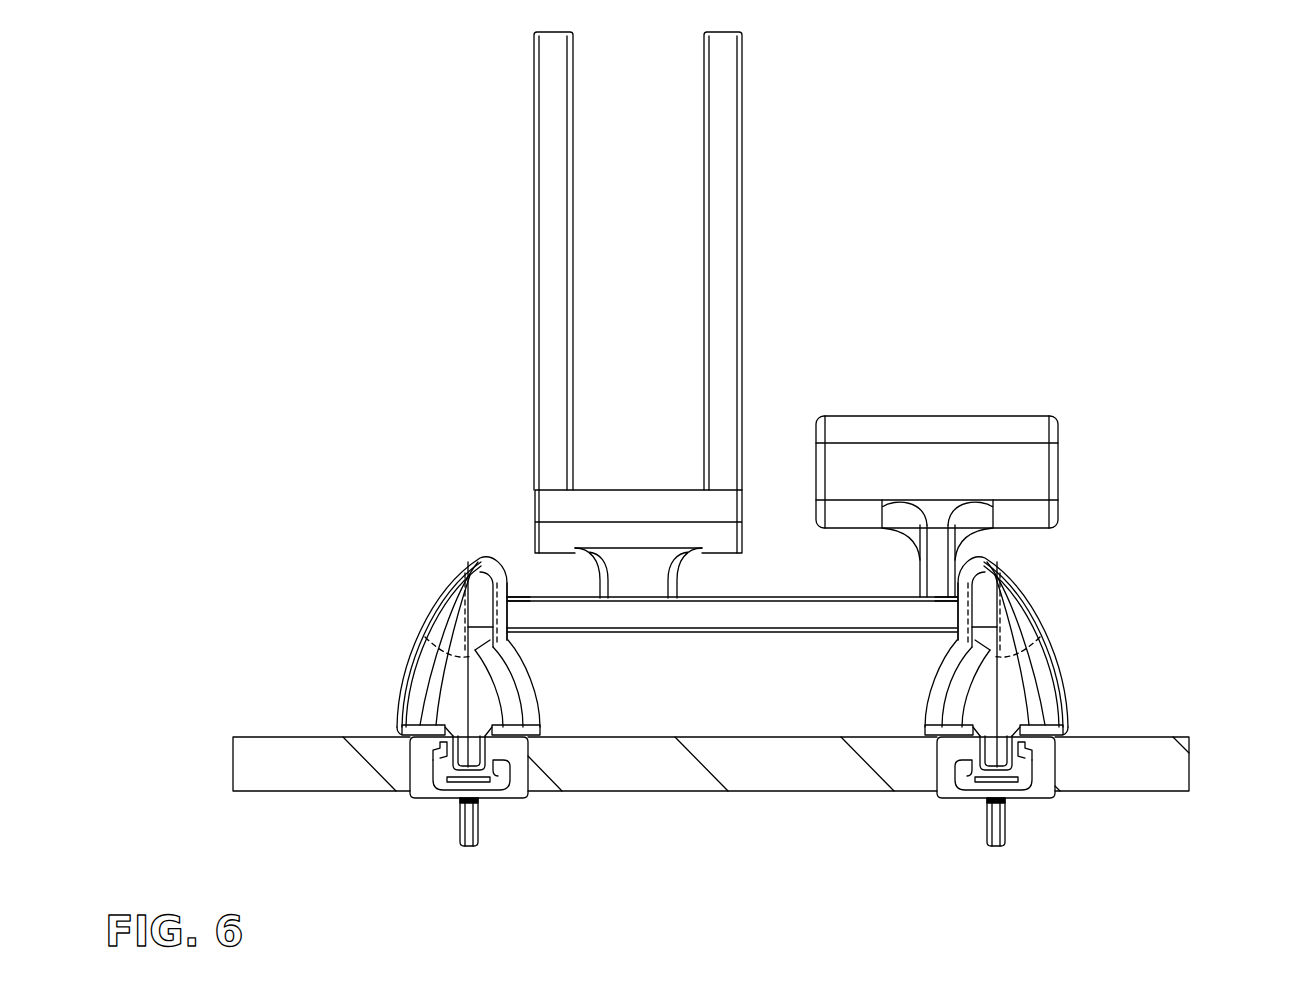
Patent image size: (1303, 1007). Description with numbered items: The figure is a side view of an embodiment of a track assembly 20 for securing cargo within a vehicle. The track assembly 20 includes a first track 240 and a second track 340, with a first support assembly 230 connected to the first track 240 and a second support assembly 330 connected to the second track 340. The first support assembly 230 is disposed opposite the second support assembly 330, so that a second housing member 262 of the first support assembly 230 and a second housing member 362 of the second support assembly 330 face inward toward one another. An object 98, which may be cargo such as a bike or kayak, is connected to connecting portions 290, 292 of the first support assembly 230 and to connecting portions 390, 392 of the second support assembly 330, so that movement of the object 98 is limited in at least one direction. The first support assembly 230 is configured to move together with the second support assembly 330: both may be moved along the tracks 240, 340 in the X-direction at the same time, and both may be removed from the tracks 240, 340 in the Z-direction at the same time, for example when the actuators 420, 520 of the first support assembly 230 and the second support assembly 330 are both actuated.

The track assembly 20 is at (910, 115).
The cargo 98 is at (862, 408).
The first support assembly 230 is at (449, 648).
The first track 240 is at (505, 805).
The second housing member 262 is at (537, 666).
The connecting portion 290 is at (432, 553).
The connecting portion 292 is at (510, 606).
The second support assembly 330 is at (1005, 662).
The second track 340 is at (947, 807).
The second housing member 362 is at (928, 664).
The connecting portion 390 is at (1085, 579).
The connecting portion 392 is at (957, 588).
The actuator 420 is at (445, 635).
The actuator 520 is at (1032, 625).